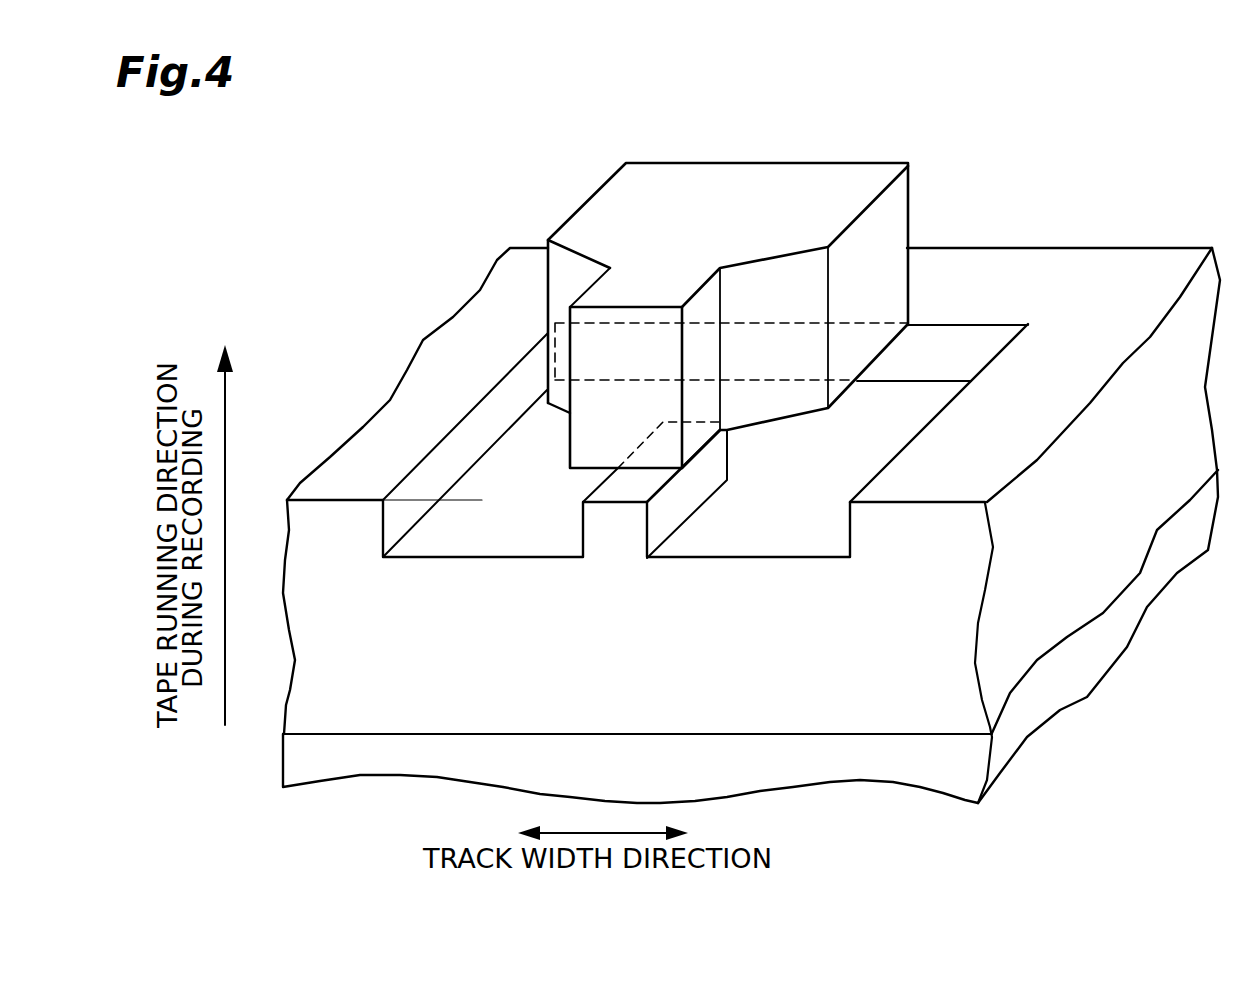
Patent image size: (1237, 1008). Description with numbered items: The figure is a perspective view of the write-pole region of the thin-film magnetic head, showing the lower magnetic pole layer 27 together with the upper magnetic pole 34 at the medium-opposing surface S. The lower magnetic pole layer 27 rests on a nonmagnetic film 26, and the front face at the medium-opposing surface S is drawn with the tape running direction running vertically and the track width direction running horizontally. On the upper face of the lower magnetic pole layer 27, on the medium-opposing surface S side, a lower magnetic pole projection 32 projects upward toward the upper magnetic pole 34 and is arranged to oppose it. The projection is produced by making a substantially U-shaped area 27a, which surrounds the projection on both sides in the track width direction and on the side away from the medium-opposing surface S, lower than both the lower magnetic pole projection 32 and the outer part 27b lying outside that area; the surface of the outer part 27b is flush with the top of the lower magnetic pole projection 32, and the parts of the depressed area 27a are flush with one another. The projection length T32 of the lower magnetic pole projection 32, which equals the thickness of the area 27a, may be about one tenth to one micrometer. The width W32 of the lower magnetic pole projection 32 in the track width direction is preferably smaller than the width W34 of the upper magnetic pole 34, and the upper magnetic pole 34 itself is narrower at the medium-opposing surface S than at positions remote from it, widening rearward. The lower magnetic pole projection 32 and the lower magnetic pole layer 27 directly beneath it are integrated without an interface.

The nonmagnetic film 26 is at (770, 763).
The lower magnetic pole layer 27 is at (877, 705).
The substantially U-shaped area 27a is at (930, 370).
The outer part 27b is at (1145, 267).
The lower magnetic pole projection 32 is at (590, 542).
The upper magnetic pole 34 is at (587, 395).
The medium-opposing surface S is at (605, 330).
The projection length of the lower magnetic pole projection T32 is at (466, 505).
The width of the lower magnetic pole projection W32 is at (641, 522).
The width of the upper magnetic pole W34 is at (675, 452).